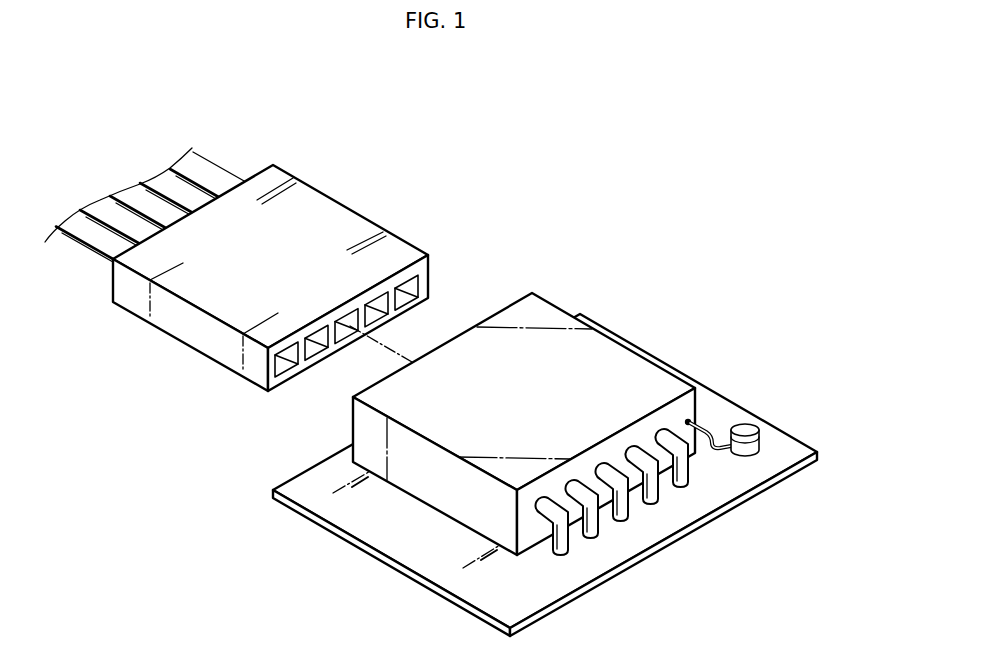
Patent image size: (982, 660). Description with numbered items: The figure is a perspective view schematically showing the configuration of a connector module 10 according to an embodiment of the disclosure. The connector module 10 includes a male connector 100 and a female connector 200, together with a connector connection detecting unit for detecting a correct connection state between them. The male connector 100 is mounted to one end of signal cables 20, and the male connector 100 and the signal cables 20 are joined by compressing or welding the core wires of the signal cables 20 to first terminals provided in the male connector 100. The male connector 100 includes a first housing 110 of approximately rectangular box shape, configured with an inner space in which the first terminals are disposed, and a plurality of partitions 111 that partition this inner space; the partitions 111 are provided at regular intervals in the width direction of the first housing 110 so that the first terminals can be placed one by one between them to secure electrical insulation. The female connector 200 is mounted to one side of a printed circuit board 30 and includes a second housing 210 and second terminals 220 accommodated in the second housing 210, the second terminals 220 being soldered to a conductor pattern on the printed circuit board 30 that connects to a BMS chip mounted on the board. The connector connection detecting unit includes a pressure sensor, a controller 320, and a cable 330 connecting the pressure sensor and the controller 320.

The connector module 10 is at (315, 86).
The signal cables 20 is at (214, 169).
The printed circuit board 30 is at (797, 452).
The male connector 100 is at (272, 266).
The first housing 110 is at (395, 250).
The partitions 111 is at (306, 349).
The female connector 200 is at (524, 422).
The second housing 210 is at (617, 356).
The second terminals 220 is at (597, 522).
The controller 320 is at (748, 428).
The cable 330 is at (703, 426).